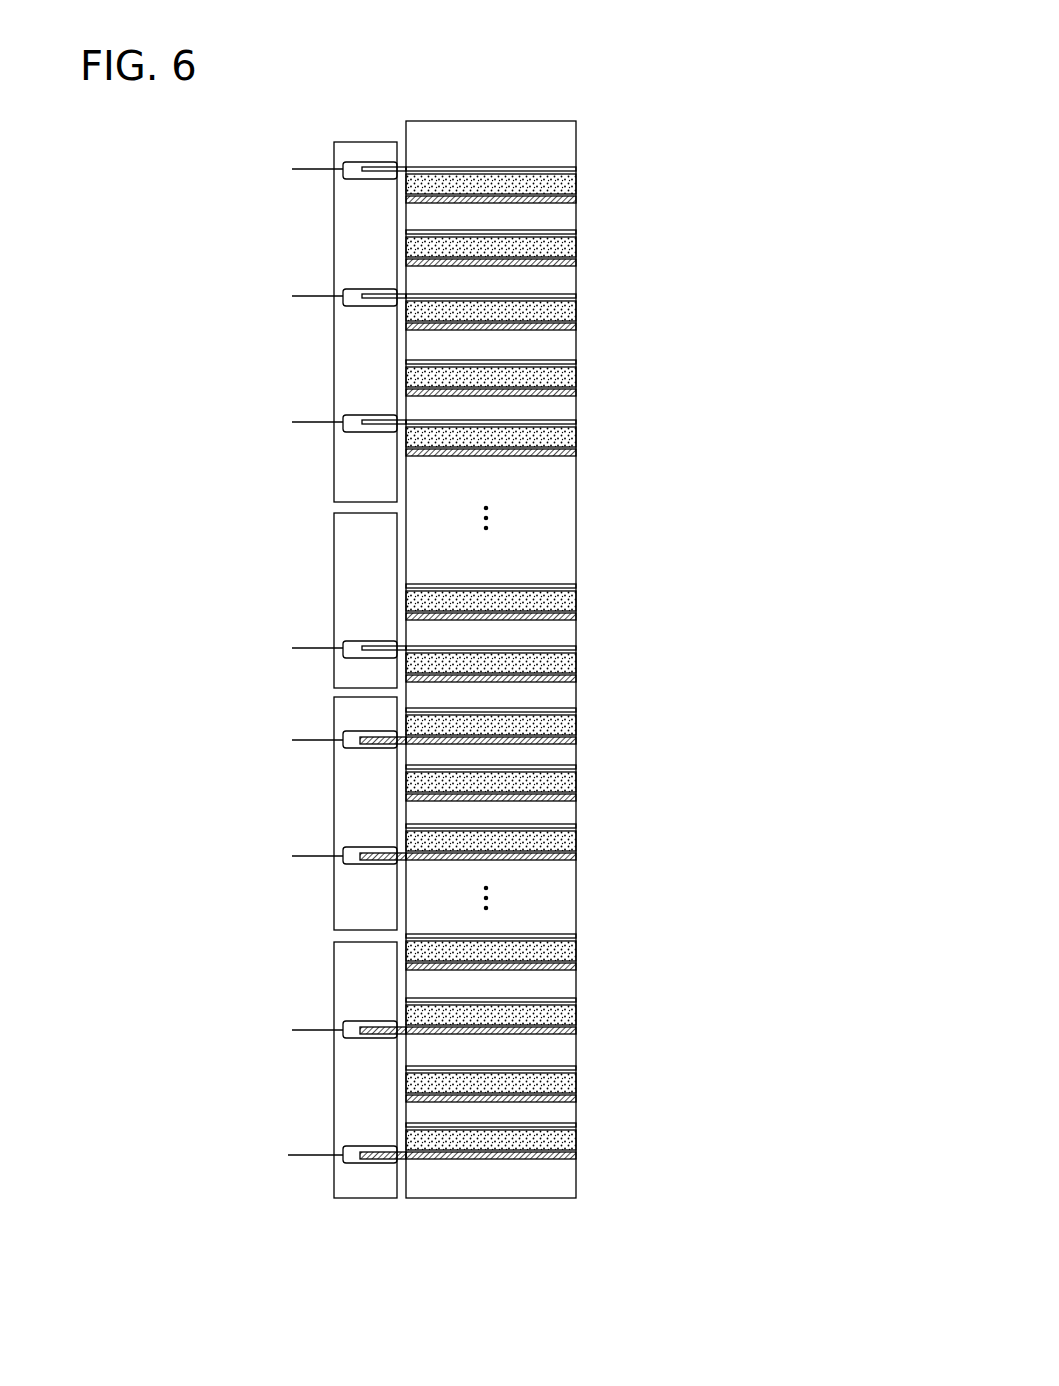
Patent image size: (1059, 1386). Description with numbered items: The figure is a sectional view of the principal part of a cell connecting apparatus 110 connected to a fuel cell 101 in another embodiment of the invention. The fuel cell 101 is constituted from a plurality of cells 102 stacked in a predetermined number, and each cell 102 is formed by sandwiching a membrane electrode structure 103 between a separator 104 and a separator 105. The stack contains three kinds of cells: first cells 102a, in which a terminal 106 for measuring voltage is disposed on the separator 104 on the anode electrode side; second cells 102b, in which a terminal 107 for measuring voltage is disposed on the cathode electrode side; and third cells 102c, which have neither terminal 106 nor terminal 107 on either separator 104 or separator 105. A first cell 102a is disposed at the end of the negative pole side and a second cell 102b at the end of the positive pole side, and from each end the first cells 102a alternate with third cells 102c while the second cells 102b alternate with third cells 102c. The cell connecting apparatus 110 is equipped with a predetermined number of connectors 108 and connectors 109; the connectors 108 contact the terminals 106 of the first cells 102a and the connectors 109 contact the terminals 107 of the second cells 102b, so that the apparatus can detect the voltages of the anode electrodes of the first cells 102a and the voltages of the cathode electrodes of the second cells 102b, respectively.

The fuel cell 101 is at (620, 100).
The cell 102 is at (566, 679).
The first cell 102a is at (536, 679).
The second cell 102b is at (598, 726).
The third cell 102c is at (598, 246).
The membrane electrode structure 103 is at (556, 182).
The separator 104 is at (517, 166).
The separator 105 is at (440, 187).
The terminal 106 is at (370, 161).
The terminal 107 is at (380, 1165).
The connector 108 is at (308, 168).
The connector 109 is at (308, 1157).
The cell connecting apparatus 110 is at (343, 130).